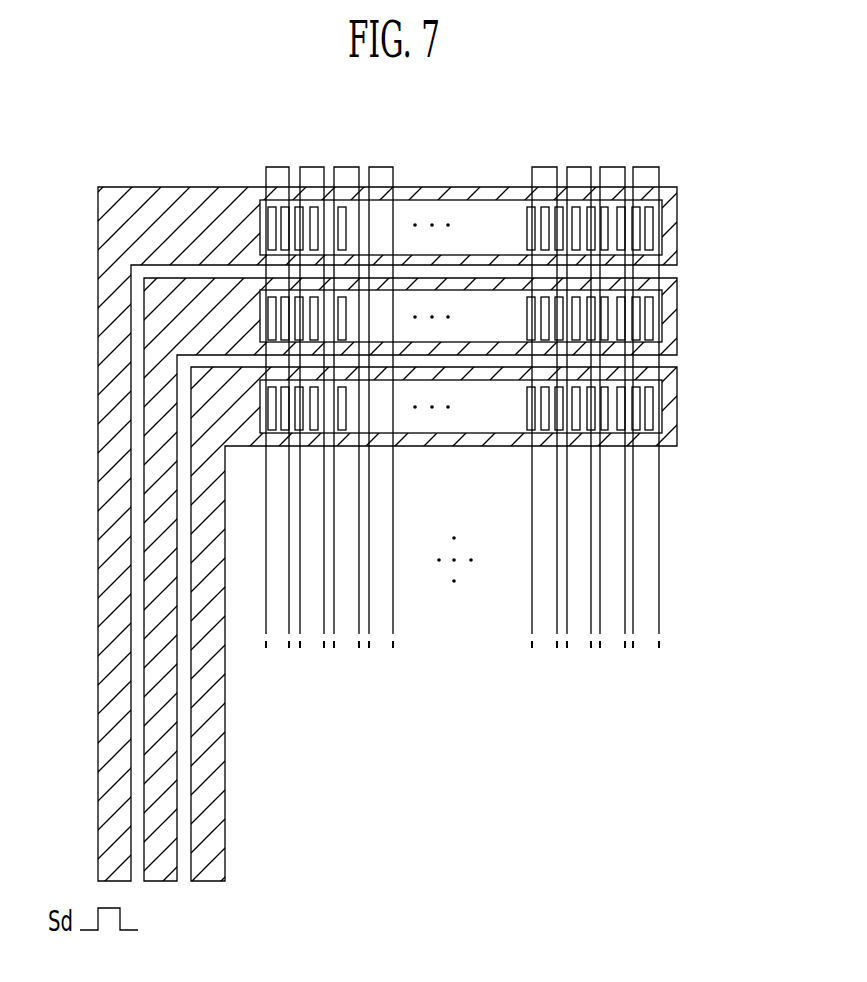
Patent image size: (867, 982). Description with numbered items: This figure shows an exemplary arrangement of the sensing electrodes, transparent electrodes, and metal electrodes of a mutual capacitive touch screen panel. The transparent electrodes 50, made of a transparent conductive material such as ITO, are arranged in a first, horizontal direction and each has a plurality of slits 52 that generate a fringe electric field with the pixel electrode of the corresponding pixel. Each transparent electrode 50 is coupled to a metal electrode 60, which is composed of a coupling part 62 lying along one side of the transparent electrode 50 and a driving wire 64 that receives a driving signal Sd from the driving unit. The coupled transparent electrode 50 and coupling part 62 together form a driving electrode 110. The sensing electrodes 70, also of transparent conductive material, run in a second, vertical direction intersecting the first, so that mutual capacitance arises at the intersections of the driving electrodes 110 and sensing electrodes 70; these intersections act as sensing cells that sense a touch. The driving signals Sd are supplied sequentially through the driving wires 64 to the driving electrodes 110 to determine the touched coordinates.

The transparent electrode 50 is at (672, 212).
The slit 52 is at (548, 222).
The metal electrode 60 is at (670, 243).
The coupling part 62 is at (196, 190).
The driving wire 64 is at (202, 673).
The sensing electrode 70 is at (613, 167).
The driving electrode 110 is at (524, 316).